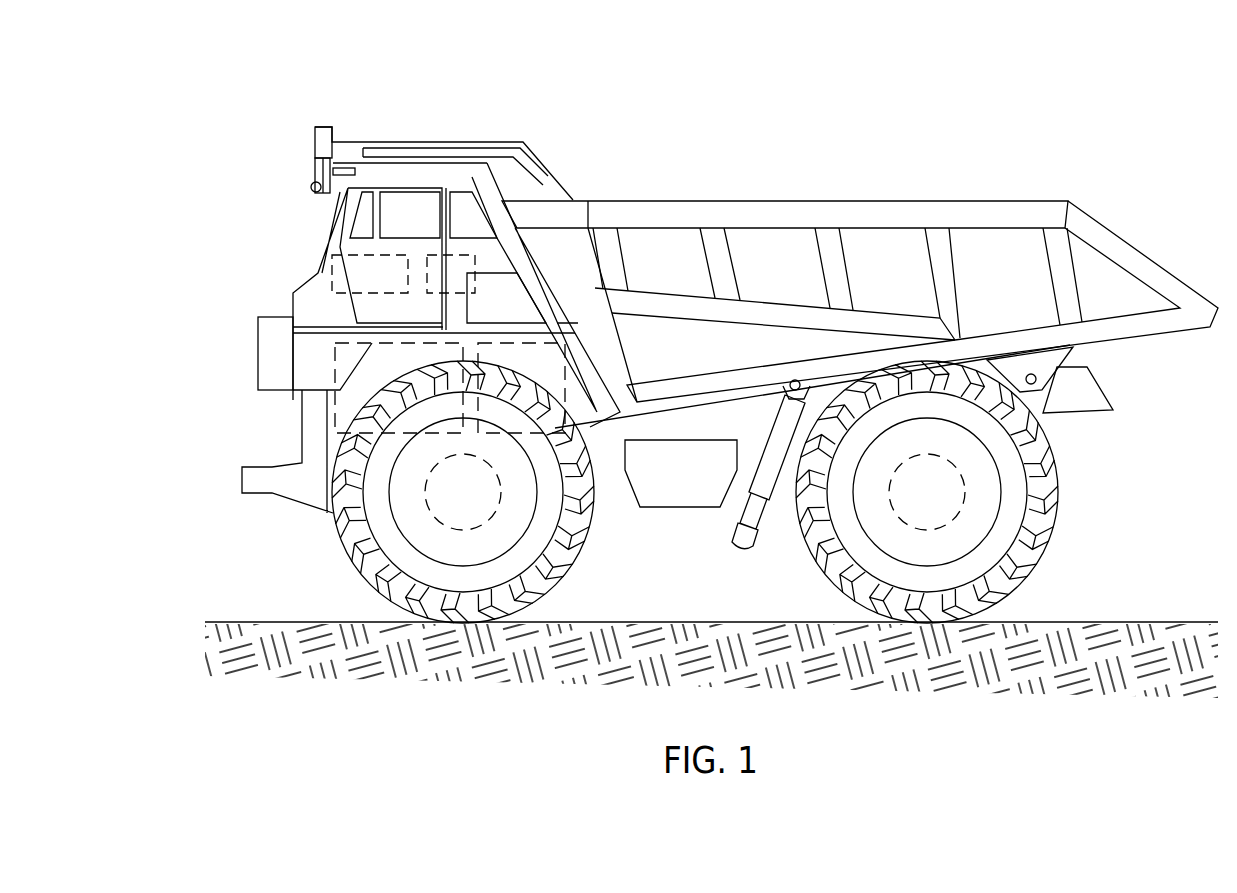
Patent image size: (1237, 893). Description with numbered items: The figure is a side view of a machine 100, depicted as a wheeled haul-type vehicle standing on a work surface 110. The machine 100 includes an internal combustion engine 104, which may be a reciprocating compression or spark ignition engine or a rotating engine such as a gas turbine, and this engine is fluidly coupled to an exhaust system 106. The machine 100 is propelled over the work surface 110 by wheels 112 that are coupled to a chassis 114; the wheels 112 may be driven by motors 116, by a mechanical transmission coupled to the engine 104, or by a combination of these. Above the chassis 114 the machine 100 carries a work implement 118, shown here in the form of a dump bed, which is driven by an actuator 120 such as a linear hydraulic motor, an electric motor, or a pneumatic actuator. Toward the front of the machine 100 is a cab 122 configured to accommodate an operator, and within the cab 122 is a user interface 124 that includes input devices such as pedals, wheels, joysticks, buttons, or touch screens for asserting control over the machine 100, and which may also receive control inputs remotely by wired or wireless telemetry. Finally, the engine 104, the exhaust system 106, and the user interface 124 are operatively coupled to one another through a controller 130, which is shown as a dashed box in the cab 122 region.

The machine 100 is at (973, 66).
The internal combustion engine 104 is at (334, 352).
The exhaust system 106 is at (513, 343).
The work surface 110 is at (1188, 620).
The wheels 112 is at (533, 585).
The chassis 114 is at (607, 455).
The motors 116 is at (430, 513).
The work implement 118 is at (1000, 200).
The actuator 120 is at (782, 473).
The cab 122 is at (250, 186).
The user interface 124 is at (331, 263).
The controller 130 is at (457, 255).